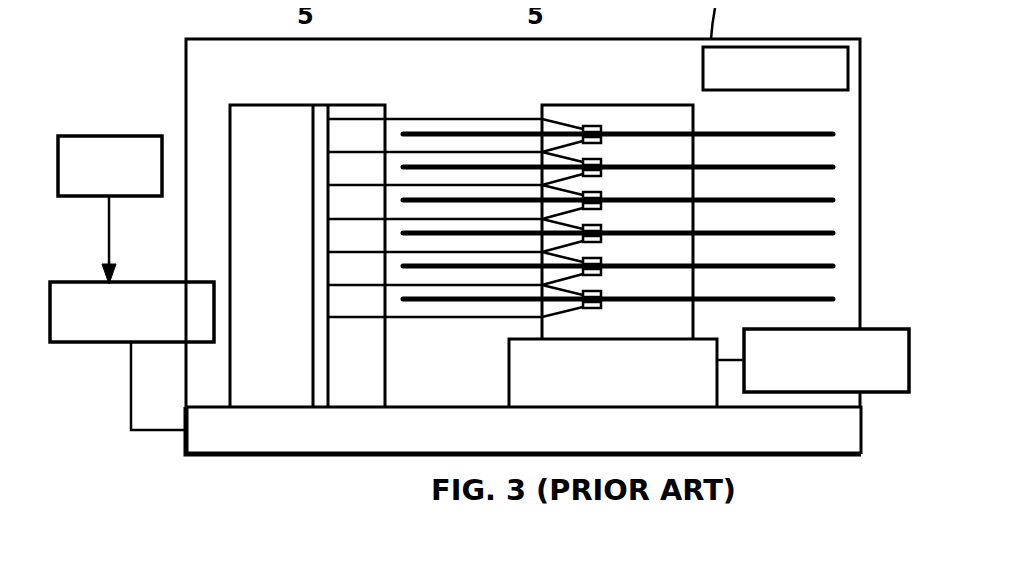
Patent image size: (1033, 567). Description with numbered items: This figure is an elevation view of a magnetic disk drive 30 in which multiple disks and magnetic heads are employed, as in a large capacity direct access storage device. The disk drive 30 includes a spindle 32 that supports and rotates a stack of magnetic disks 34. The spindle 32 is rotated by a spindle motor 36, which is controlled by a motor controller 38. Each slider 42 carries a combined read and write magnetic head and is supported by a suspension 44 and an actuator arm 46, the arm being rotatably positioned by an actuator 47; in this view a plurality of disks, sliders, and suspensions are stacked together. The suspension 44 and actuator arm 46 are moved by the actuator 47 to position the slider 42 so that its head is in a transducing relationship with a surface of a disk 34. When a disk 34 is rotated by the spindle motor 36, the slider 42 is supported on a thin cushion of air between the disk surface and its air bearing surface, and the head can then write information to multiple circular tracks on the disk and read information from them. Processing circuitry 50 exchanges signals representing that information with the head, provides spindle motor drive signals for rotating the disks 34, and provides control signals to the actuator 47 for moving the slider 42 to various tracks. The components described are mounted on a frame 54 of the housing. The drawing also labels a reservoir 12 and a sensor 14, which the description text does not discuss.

The ink reservoir 12 is at (847, 64).
The sensor 14 is at (101, 133).
The magnetic disk drive 30 is at (712, 119).
The spindle 32 is at (668, 101).
The magnetic disk 34 is at (808, 132).
The spindle motor 36 is at (632, 385).
The motor controller 38 is at (895, 391).
The slider 42 is at (584, 153).
The suspension 44 is at (552, 147).
The actuator arm 46 is at (490, 148).
The actuator 47 is at (261, 102).
The processing circuitry 50 is at (93, 341).
The frame 54 is at (308, 454).